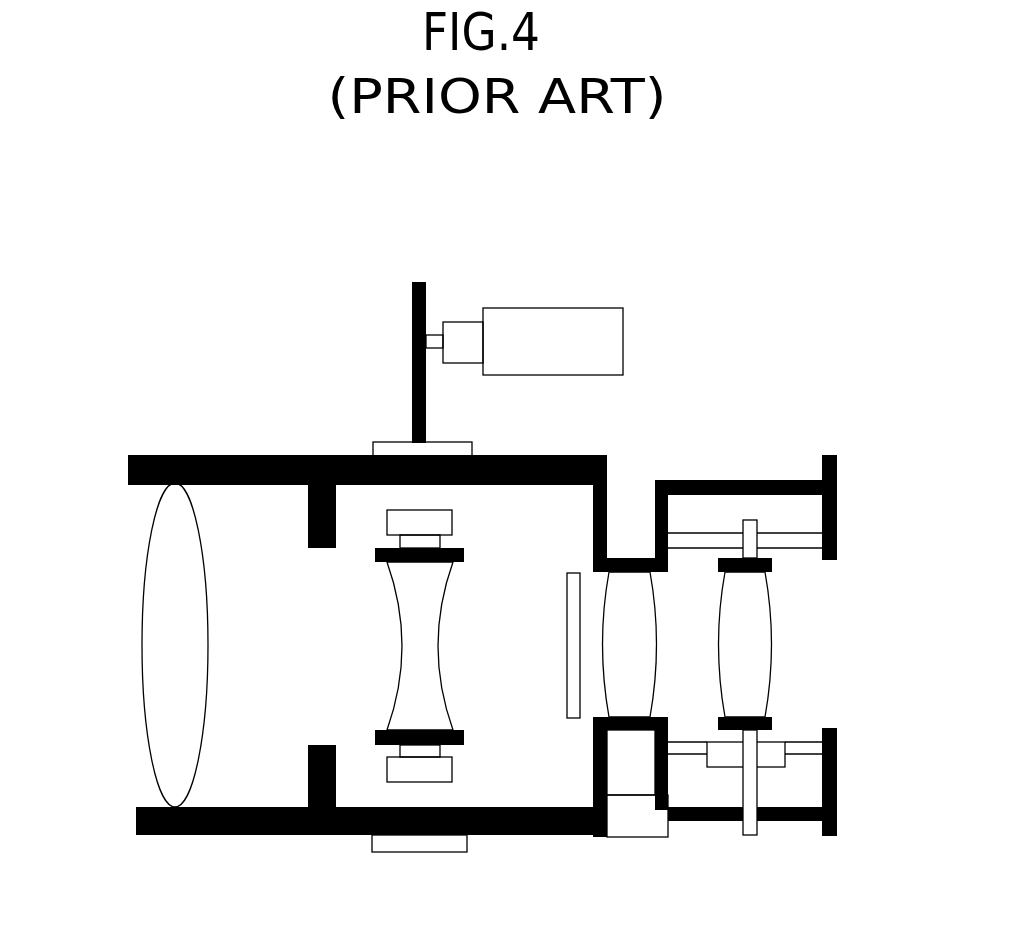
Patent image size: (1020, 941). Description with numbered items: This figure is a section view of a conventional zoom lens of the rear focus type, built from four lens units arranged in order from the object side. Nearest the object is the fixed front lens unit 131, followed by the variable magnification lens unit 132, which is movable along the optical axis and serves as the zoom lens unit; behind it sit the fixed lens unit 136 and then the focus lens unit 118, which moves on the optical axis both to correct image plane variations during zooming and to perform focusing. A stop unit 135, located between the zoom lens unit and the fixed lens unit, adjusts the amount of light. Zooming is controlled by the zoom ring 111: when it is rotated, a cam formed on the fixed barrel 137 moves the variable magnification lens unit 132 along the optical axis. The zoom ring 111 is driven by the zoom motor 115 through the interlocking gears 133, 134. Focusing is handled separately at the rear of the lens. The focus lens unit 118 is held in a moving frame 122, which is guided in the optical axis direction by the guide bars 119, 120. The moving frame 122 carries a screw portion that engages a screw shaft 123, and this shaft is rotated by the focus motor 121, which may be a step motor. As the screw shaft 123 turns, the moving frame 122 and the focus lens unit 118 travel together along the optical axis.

The zoom ring 111 is at (470, 442).
The zoom motor 115 is at (548, 318).
The focus lens unit 118 is at (765, 650).
The guide bar 119 is at (802, 537).
The guide bar 120 is at (805, 745).
The focus motor 121 is at (632, 837).
The moving frame 122 is at (752, 836).
The screw shaft 123 is at (798, 822).
The fixed front lens unit 131 is at (146, 640).
The variable magnification lens unit 132 is at (402, 648).
The interlocking gear 133 is at (412, 390).
The interlocking gear 134 is at (412, 298).
The stop unit 135 is at (567, 636).
The fixed lens unit 136 is at (648, 647).
The fixed barrel 137 is at (515, 836).